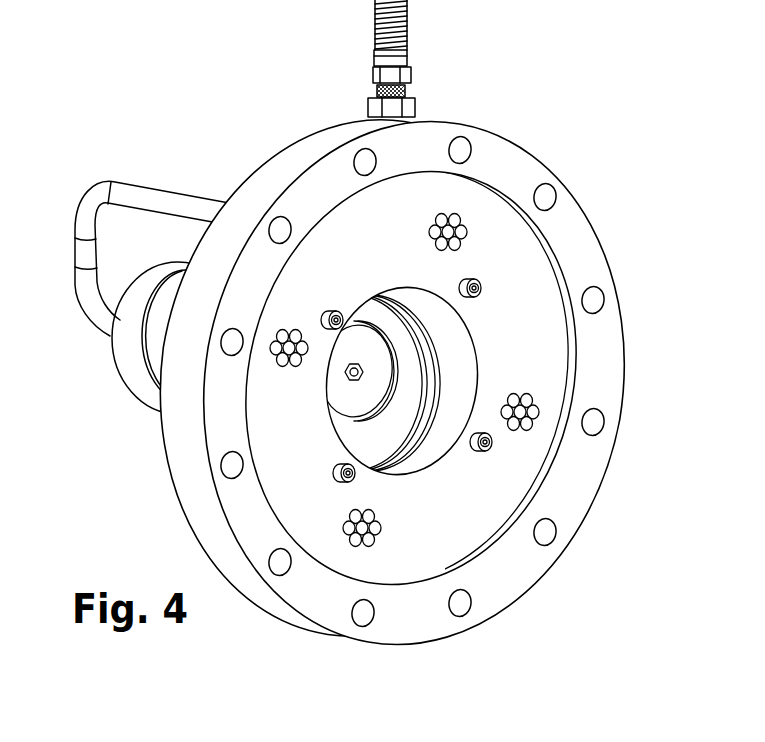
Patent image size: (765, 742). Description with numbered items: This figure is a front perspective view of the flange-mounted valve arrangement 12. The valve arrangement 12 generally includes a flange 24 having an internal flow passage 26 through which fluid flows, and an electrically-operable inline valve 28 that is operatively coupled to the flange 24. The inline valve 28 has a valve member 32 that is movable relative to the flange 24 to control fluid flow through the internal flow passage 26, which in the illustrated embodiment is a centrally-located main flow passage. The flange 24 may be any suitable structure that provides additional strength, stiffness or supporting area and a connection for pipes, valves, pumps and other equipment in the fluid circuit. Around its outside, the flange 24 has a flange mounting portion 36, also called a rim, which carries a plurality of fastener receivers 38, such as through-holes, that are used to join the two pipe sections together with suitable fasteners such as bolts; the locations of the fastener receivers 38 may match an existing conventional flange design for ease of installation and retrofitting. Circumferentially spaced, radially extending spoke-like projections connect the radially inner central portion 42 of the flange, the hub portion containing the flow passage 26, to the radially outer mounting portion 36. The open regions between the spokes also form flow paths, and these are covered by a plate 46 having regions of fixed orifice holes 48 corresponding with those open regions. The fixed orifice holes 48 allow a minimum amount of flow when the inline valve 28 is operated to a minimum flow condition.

The valve arrangement 12 is at (190, 124).
The flange 24 is at (514, 117).
The internal flow passage 26 is at (462, 352).
The inline valve 28 is at (126, 398).
The valve member 32 is at (368, 380).
The flange mounting portion 36 is at (527, 167).
The fastener receivers 38 is at (162, 0).
The radially inner central portion 42 is at (452, 328).
The plate 46 is at (452, 545).
The fixed orifice holes 48 is at (530, 428).